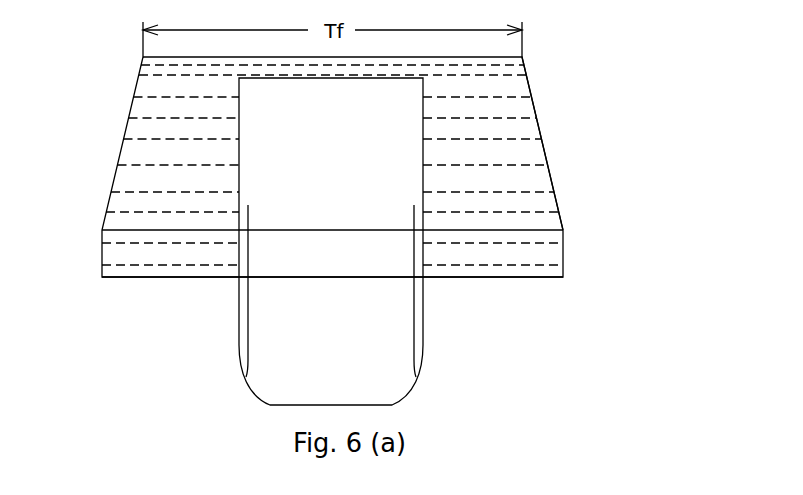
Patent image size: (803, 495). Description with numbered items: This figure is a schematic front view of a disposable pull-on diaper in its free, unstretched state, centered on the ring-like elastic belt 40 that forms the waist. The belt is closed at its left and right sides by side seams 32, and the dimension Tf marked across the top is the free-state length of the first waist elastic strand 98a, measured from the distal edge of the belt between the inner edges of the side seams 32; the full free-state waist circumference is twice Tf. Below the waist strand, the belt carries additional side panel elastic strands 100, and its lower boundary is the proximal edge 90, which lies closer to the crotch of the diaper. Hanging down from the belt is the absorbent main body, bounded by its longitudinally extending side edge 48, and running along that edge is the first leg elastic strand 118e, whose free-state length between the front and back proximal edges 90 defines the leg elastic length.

The elastic belt 40 is at (133, 100).
The side seam 32 is at (541, 133).
The first waist elastic strand 98a is at (508, 65).
The side panel elastic strand 100 is at (512, 211).
The proximal edge 90 is at (512, 277).
The longitudinal side edge 48 is at (423, 317).
The leg elastic strand 118e is at (415, 350).